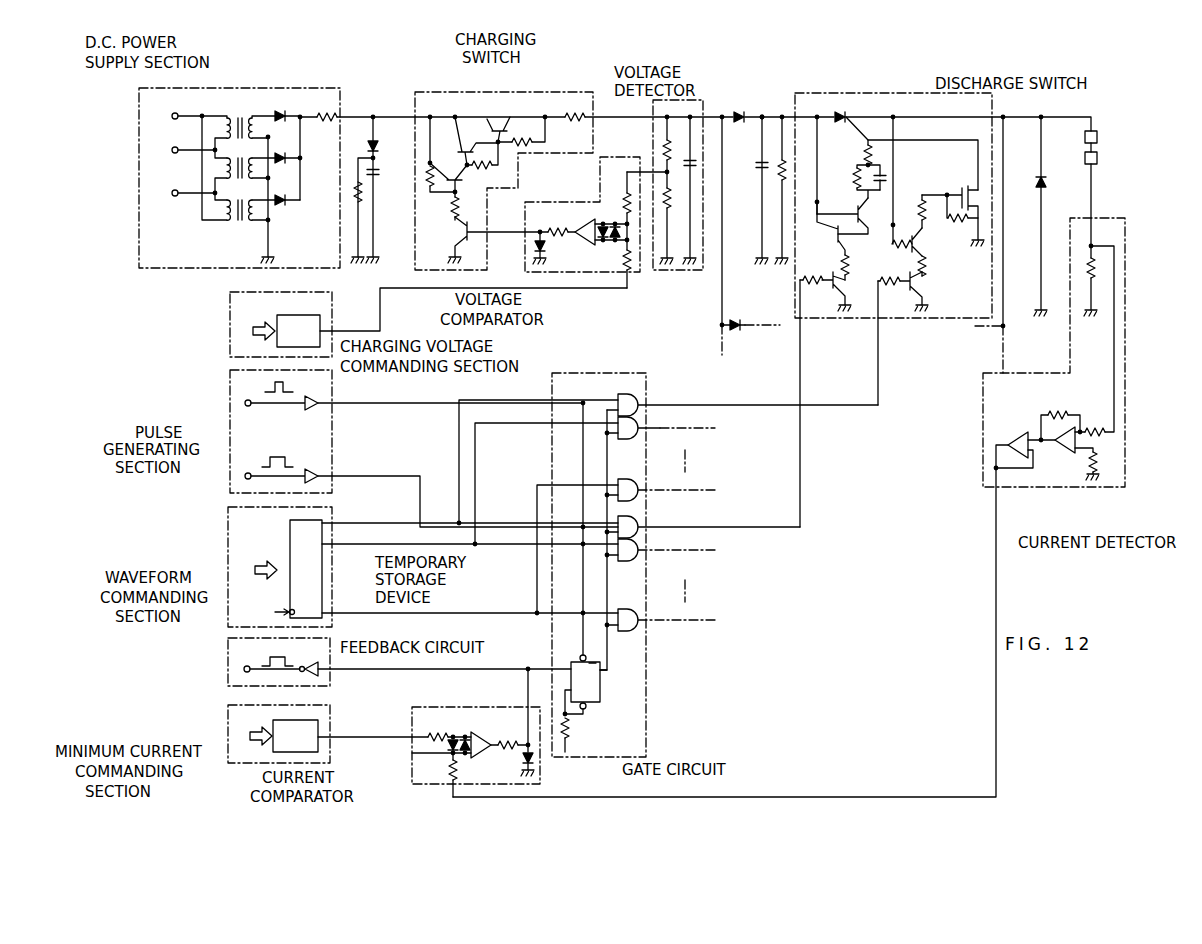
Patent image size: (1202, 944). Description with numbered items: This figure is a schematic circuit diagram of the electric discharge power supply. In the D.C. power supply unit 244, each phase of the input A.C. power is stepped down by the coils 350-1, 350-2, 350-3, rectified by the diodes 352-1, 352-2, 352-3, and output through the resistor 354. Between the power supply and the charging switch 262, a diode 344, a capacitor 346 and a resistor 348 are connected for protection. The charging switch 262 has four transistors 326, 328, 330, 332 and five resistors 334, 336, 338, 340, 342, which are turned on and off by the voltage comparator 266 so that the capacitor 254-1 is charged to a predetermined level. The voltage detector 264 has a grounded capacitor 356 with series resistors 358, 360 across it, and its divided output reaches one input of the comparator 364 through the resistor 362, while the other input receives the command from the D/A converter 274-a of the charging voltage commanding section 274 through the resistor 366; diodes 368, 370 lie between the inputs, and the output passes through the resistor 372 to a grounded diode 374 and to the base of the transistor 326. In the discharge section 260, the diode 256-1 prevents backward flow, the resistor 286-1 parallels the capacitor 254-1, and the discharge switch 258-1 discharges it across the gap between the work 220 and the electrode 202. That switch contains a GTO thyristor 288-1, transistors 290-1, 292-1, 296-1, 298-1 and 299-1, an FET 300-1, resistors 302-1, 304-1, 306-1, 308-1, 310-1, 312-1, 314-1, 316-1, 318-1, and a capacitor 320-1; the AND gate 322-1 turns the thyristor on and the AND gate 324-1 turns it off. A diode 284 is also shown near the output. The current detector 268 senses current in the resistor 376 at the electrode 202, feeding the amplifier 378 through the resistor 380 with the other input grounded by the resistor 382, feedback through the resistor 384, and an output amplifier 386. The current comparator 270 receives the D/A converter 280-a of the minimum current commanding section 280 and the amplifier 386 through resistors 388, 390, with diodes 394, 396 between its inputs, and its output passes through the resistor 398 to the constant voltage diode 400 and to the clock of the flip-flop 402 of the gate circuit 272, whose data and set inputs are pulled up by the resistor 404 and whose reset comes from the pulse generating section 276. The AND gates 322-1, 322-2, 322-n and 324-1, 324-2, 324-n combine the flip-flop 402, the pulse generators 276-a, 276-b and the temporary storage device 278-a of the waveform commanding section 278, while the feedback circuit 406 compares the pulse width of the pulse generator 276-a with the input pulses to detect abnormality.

The D.C. power supply unit 244 is at (285, 88).
The coil 350-1 is at (226, 124).
The coil 350-2 is at (226, 168).
The coil 350-3 is at (227, 218).
The diode 352-1 is at (276, 106).
The diode 352-2 is at (288, 158).
The diode 352-3 is at (283, 207).
The resistor 348 is at (290, 195).
The resistor 354 is at (330, 114).
The diode 344 is at (376, 142).
The resistor 336 is at (378, 172).
The capacitor 346 is at (362, 193).
The transistor 326 is at (455, 240).
The transistor 328 is at (433, 110).
The transistor 330 is at (466, 138).
The transistor 332 is at (505, 128).
The charging switch 262 is at (524, 92).
The resistor 342 is at (575, 123).
The resistor 340 is at (525, 147).
The resistor 338 is at (482, 169).
The resistor 334 is at (452, 207).
The voltage comparator 266 is at (588, 272).
The comparator 364 is at (585, 246).
The resistor 372 is at (550, 228).
The diode 374 is at (535, 250).
The diode 368 is at (603, 221).
The diode 370 is at (616, 245).
The resistor 362 is at (624, 200).
The resistor 366 is at (630, 262).
The voltage detector 264 is at (694, 272).
The resistor 358 is at (664, 152).
The resistor 360 is at (670, 200).
The capacitor 356 is at (696, 163).
The diode 256-1 is at (738, 113).
The capacitor 254-1 is at (758, 170).
The discharge section 260 is at (766, 113).
The resistor 286-1 is at (784, 165).
The discharge switch 258-1 is at (916, 93).
The GTO thyristor 288-1 is at (852, 115).
The resistor 308-1 is at (866, 155).
The resistor 306-1 is at (856, 180).
The capacitor 320-1 is at (884, 178).
The transistor 299-1 is at (862, 220).
The transistor 292-1 is at (836, 238).
The resistor 304-1 is at (848, 265).
The resistor 302-1 is at (838, 292).
The transistor 290-1 is at (813, 284).
The transistor 298-1 is at (897, 240).
The resistor 312-1 is at (918, 250).
The resistor 316-1 is at (925, 202).
The resistor 314-1 is at (919, 270).
The transistor 296-1 is at (925, 292).
The resistor 310-1 is at (890, 286).
The FET 300-1 is at (966, 186).
The resistor 318-1 is at (960, 223).
The work 220 is at (1098, 137).
The electrode 202 is at (1098, 160).
The diode 284 is at (1046, 184).
The resistor 376 is at (1096, 266).
The current detector 268 is at (1096, 487).
The amplifier 378 is at (1068, 455).
The resistor 380 is at (1094, 428).
The resistor 384 is at (1056, 412).
The resistor 382 is at (1097, 462).
The amplifier 386 is at (1016, 434).
The charging voltage commanding section 274 is at (230, 331).
The D/A converter 274-a is at (316, 315).
The pulse generating section 276 is at (230, 411).
The pulse generator 276-b is at (312, 410).
The pulse generator 276-a is at (318, 472).
The waveform commanding section 278 is at (228, 545).
The temporary storage device 278-a is at (290, 540).
The gate circuit 272 is at (646, 688).
The AND gate 324-1 is at (640, 398).
The AND gate 324-2 is at (642, 432).
The AND gate 324-n is at (640, 488).
The AND gate 322-1 is at (640, 524).
The AND gate 322-2 is at (642, 554).
The AND gate 322-n is at (640, 617).
The D-type flip-flop 402 is at (596, 703).
The resistor 404 is at (570, 728).
The feedback circuit 406 is at (228, 655).
The minimum current commanding section 280 is at (228, 722).
The D/A converter 280-a is at (275, 752).
The current comparator 270 is at (412, 775).
The resistor 388 is at (436, 733).
The diode 394 is at (440, 750).
The diode 396 is at (476, 730).
The resistor 398 is at (508, 741).
The resistor 390 is at (450, 772).
The constant voltage diode 400 is at (532, 760).